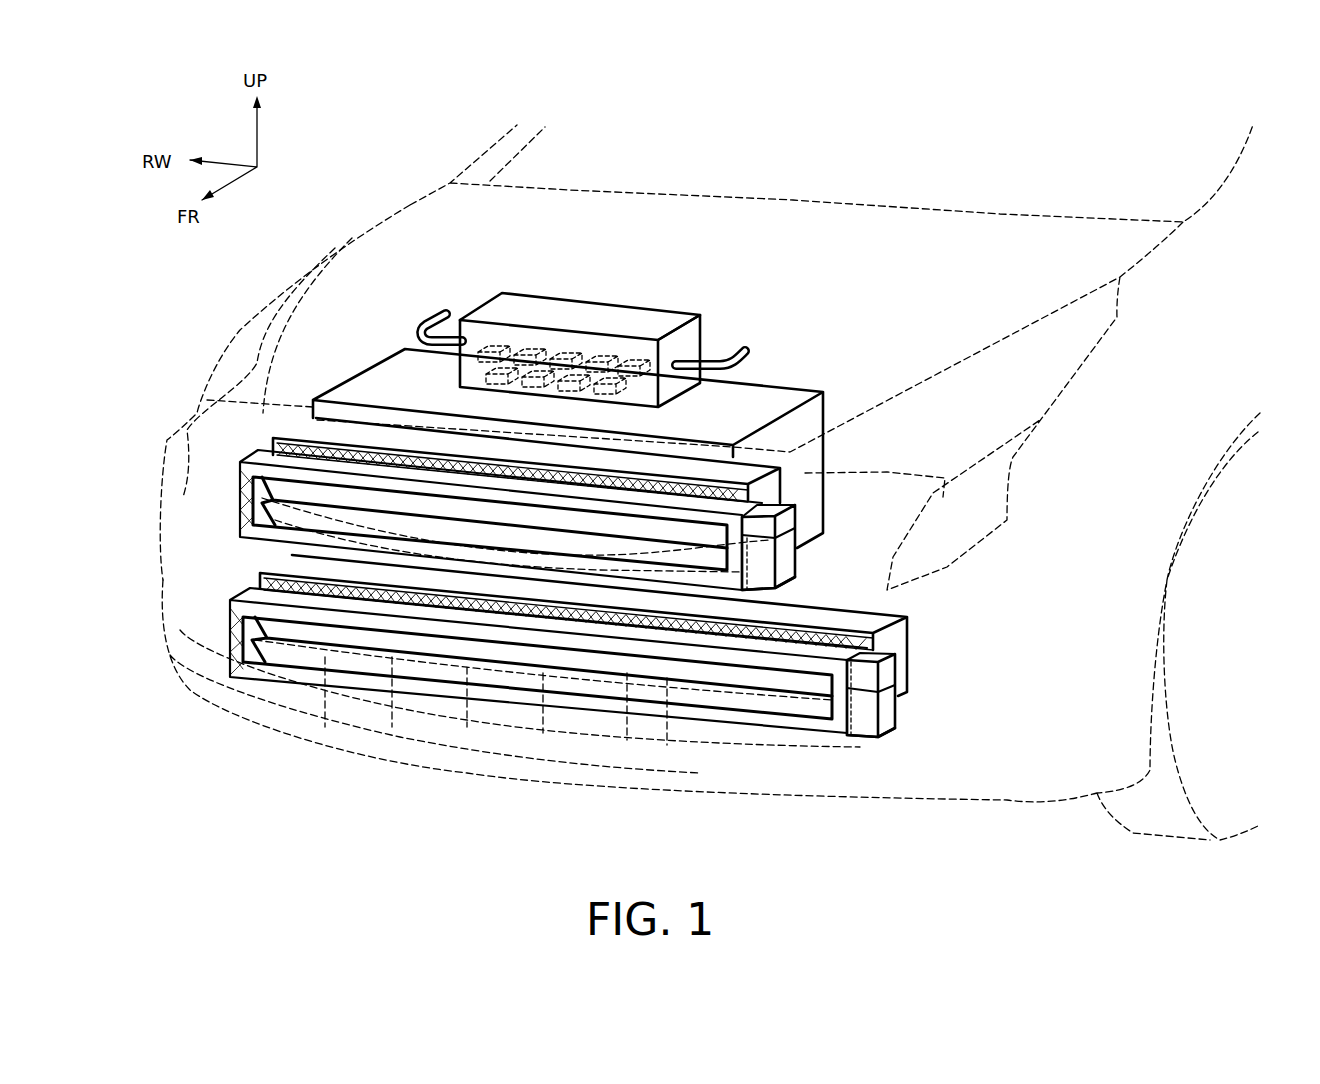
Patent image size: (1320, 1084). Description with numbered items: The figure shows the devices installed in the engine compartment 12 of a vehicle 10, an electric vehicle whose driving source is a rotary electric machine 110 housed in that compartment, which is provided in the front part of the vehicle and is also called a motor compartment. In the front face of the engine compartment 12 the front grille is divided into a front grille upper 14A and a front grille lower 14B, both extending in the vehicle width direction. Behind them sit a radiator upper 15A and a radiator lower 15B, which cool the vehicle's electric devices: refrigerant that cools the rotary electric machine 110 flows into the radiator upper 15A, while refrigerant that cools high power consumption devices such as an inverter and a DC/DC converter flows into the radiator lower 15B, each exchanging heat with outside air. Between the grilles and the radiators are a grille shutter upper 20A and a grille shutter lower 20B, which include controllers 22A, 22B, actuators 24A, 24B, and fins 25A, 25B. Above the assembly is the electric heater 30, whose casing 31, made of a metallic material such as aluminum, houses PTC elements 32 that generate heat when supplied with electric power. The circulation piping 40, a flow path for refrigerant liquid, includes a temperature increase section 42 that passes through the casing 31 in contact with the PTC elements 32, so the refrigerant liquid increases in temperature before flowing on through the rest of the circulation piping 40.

The vehicle 10 is at (412, 205).
The engine compartment 12 is at (650, 260).
The rotary electric machine 110 is at (388, 383).
The front grille upper 14A is at (232, 487).
The front grille lower 14B is at (410, 727).
The radiator upper 15A is at (745, 473).
The radiator lower 15B is at (895, 638).
The grille shutter upper 20A is at (793, 502).
The grille shutter lower 20B is at (880, 742).
The controller 22A is at (788, 518).
The controller 22B is at (885, 673).
The actuator 24A is at (788, 577).
The actuator 24B is at (885, 723).
The fins 25A is at (290, 492).
The fins 25B is at (330, 632).
The electric heater 30 is at (715, 325).
The casing 31 is at (675, 315).
The PTC elements 32 is at (677, 403).
The circulation piping 40 is at (432, 327).
The temperature increase section 42 is at (573, 327).